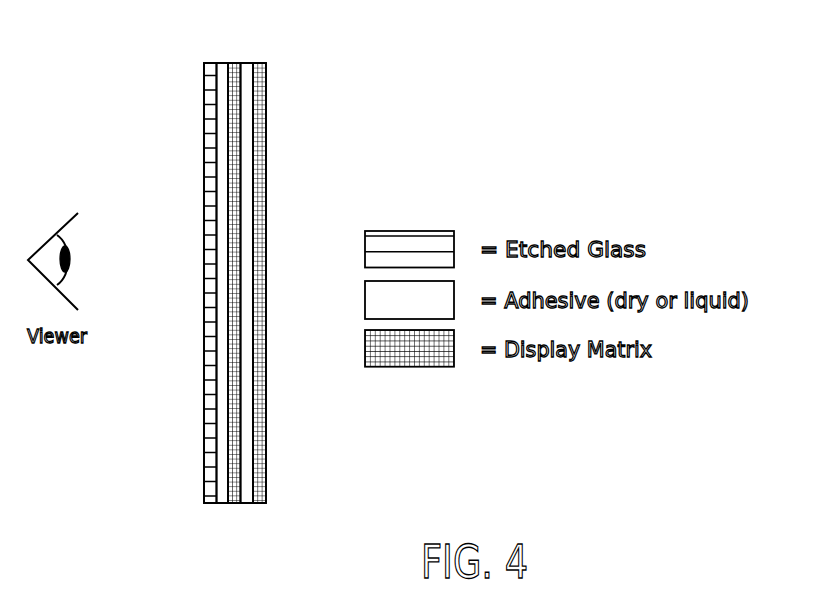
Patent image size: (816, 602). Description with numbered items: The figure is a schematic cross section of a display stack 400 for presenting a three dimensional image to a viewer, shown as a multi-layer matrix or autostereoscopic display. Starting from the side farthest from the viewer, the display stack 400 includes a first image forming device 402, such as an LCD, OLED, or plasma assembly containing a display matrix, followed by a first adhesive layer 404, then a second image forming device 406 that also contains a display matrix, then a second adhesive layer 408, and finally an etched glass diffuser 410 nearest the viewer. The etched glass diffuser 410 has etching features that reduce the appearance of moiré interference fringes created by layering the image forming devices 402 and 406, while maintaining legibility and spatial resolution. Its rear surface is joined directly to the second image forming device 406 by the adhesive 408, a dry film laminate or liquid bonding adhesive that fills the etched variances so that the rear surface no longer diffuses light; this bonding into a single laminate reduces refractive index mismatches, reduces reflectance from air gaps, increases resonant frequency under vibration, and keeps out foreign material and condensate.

The display stack 400 is at (345, 102).
The first image forming device 402 is at (258, 63).
The first adhesive layer 404 is at (248, 503).
The second image forming device 406 is at (234, 63).
The second adhesive layer 408 is at (222, 503).
The etched glass diffuser 410 is at (208, 245).